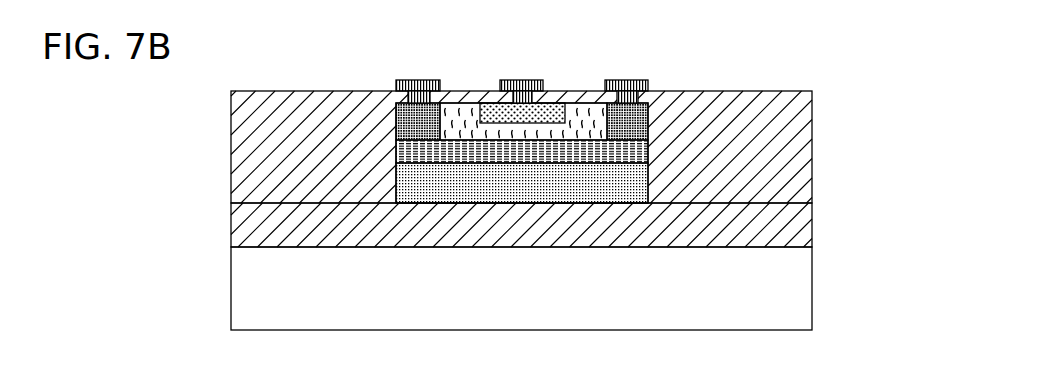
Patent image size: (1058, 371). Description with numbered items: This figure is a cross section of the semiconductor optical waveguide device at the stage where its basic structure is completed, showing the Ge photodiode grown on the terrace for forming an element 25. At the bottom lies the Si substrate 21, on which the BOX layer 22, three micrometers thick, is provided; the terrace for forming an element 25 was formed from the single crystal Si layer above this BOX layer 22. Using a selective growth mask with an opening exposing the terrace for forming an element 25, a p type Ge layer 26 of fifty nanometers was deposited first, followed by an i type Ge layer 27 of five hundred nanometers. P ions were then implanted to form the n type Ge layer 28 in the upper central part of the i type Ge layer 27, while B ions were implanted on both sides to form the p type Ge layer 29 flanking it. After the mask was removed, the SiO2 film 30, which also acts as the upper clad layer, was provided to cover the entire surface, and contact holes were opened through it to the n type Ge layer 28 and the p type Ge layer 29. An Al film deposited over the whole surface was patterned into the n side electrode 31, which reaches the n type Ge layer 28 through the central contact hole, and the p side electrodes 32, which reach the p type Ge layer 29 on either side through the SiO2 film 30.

The Si substrate 21 is at (802, 279).
The BOX layer 22 is at (803, 225).
The terrace for forming an element 25 is at (420, 185).
The p type Ge layer 26 is at (400, 160).
The i type Ge layer 27 is at (576, 103).
The n type Ge layer 28 is at (494, 103).
The p type Ge layer 29 is at (398, 128).
The SiO2 film 30 is at (803, 140).
The n side electrode 31 is at (527, 80).
The p side electrodes 32 is at (420, 80).